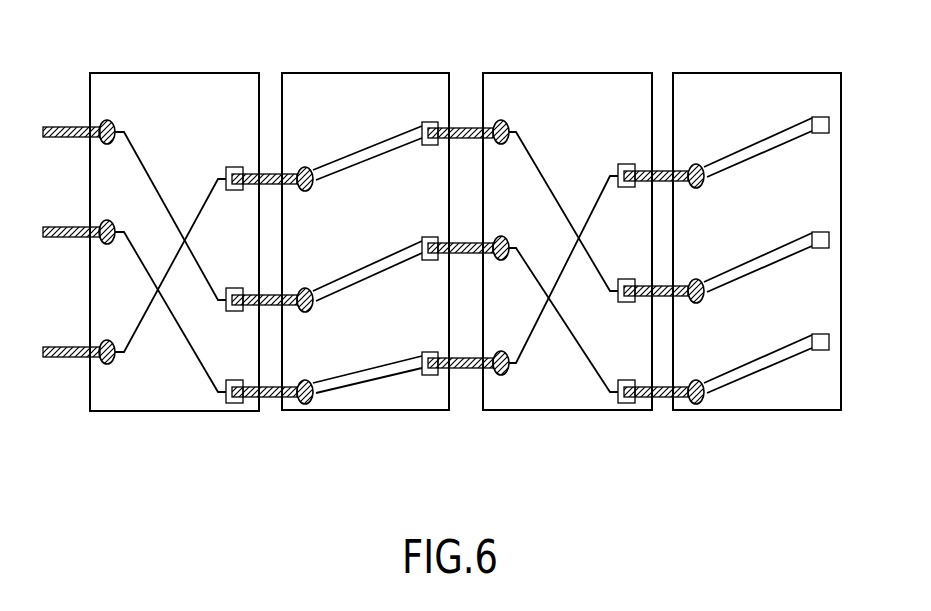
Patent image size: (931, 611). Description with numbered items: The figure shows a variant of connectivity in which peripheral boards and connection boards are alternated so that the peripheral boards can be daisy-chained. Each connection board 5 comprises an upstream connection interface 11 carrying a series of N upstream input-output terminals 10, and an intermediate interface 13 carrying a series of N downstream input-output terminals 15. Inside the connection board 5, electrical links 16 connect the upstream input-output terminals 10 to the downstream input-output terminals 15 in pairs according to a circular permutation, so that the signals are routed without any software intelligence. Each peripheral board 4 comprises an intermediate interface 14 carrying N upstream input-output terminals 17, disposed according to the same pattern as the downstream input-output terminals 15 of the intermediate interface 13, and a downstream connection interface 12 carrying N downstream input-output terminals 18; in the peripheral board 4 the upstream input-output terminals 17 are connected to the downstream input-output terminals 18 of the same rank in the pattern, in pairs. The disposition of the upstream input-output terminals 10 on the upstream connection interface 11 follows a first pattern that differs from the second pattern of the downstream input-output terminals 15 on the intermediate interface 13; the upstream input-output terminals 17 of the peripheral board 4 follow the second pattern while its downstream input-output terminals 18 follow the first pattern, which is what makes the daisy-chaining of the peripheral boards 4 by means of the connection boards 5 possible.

The peripheral board 4 is at (366, 73).
The connection board 5 is at (160, 73).
The upstream input-output terminal 10 is at (108, 119).
The upstream connection interface 11 is at (89, 246).
The downstream connection interface 12 is at (453, 247).
The intermediate interface 13 is at (261, 246).
The intermediate interface 14 is at (305, 246).
The downstream input-output terminal 15 is at (240, 167).
The electrical link 16 is at (192, 347).
The upstream input-output terminal 17 is at (310, 167).
The downstream input-output terminal 18 is at (430, 122).